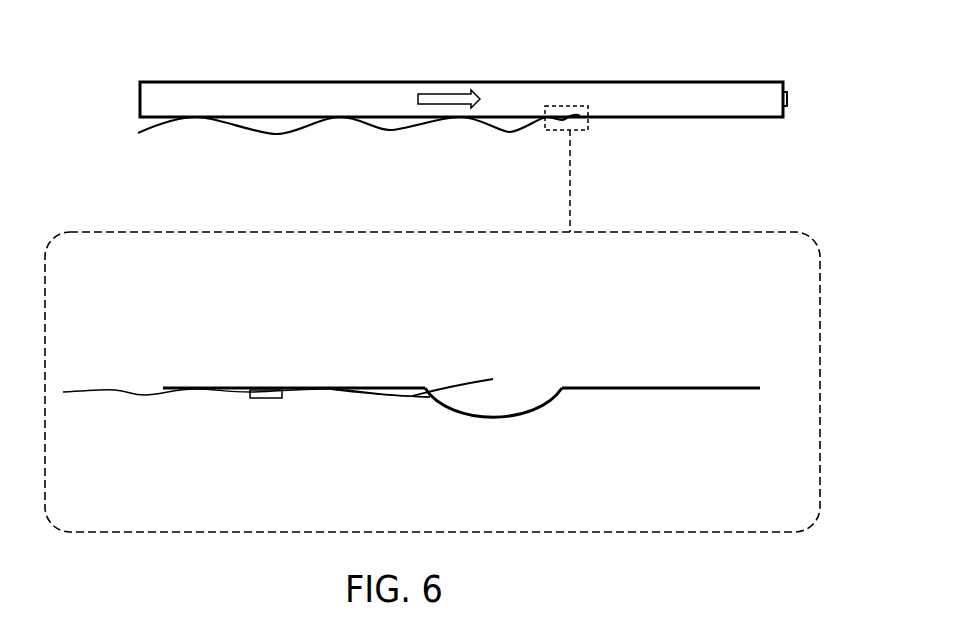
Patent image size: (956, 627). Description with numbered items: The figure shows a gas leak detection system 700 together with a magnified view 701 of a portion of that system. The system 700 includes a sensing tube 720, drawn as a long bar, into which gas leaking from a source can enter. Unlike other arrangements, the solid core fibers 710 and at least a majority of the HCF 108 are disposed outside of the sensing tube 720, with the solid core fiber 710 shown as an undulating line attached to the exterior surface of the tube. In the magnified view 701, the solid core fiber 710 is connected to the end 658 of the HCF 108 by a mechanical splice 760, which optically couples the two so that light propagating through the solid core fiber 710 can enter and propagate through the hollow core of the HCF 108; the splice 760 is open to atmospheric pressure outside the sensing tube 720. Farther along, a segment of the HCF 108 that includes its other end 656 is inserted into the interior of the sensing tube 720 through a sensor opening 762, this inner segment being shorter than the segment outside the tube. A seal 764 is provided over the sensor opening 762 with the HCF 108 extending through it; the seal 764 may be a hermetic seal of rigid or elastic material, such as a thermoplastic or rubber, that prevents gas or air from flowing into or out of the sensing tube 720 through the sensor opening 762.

The gas leak detection system 700 is at (125, 82).
The magnified view 701 is at (107, 232).
The solid core fiber 710 is at (275, 134).
The sensing tube 720 is at (463, 236).
The end of the HCF 658 is at (270, 388).
The end of the HCF 656 is at (493, 379).
The HCF 108 is at (378, 398).
The splice 760 is at (262, 422).
The sensor opening 762 is at (565, 425).
The seal 764 is at (544, 409).